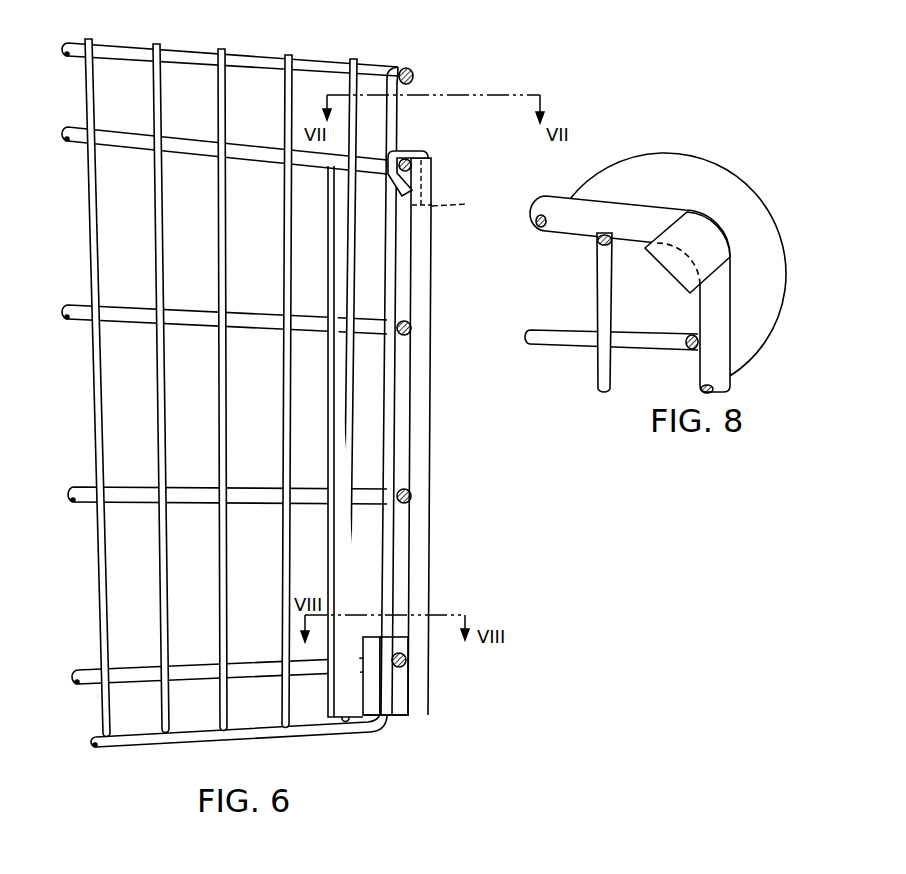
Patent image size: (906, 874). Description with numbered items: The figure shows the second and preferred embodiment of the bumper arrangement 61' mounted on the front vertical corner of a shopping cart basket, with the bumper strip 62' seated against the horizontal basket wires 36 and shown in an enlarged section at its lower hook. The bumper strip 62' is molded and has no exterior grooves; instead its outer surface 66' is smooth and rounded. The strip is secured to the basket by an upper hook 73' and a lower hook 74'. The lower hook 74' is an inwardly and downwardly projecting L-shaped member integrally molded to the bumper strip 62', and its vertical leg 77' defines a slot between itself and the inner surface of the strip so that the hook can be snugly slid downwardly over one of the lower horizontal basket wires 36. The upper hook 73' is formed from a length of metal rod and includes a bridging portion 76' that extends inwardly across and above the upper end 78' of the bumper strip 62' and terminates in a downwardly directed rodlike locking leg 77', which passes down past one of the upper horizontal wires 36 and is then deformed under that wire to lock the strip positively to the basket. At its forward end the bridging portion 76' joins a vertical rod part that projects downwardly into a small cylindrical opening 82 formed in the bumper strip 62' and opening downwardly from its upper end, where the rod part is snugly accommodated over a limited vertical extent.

In FIG. 6, the bumper strip 62' is at (444, 391).
In FIG. 8, the bumper strip 62' is at (636, 243).
In FIG. 6, the bridging portion 76' is at (430, 142).
In FIG. 6, the upper end 78' is at (449, 161).
In FIG. 6, the bumper arrangement 61' is at (468, 163).
In FIG. 6, the cylindrical opening 82 is at (466, 204).
In FIG. 6, the upper hook 73' is at (225, 177).
In FIG. 6, the lower hook 74' is at (301, 441).
In FIG. 8, the lower hook 74' is at (611, 312).
In FIG. 6, the vertical leg 77' is at (345, 710).
In FIG. 8, the vertical leg 77' is at (675, 262).
In FIG. 6, the horizontal basket wire 36 is at (406, 662).
In FIG. 8, the outer surface 66' is at (706, 351).